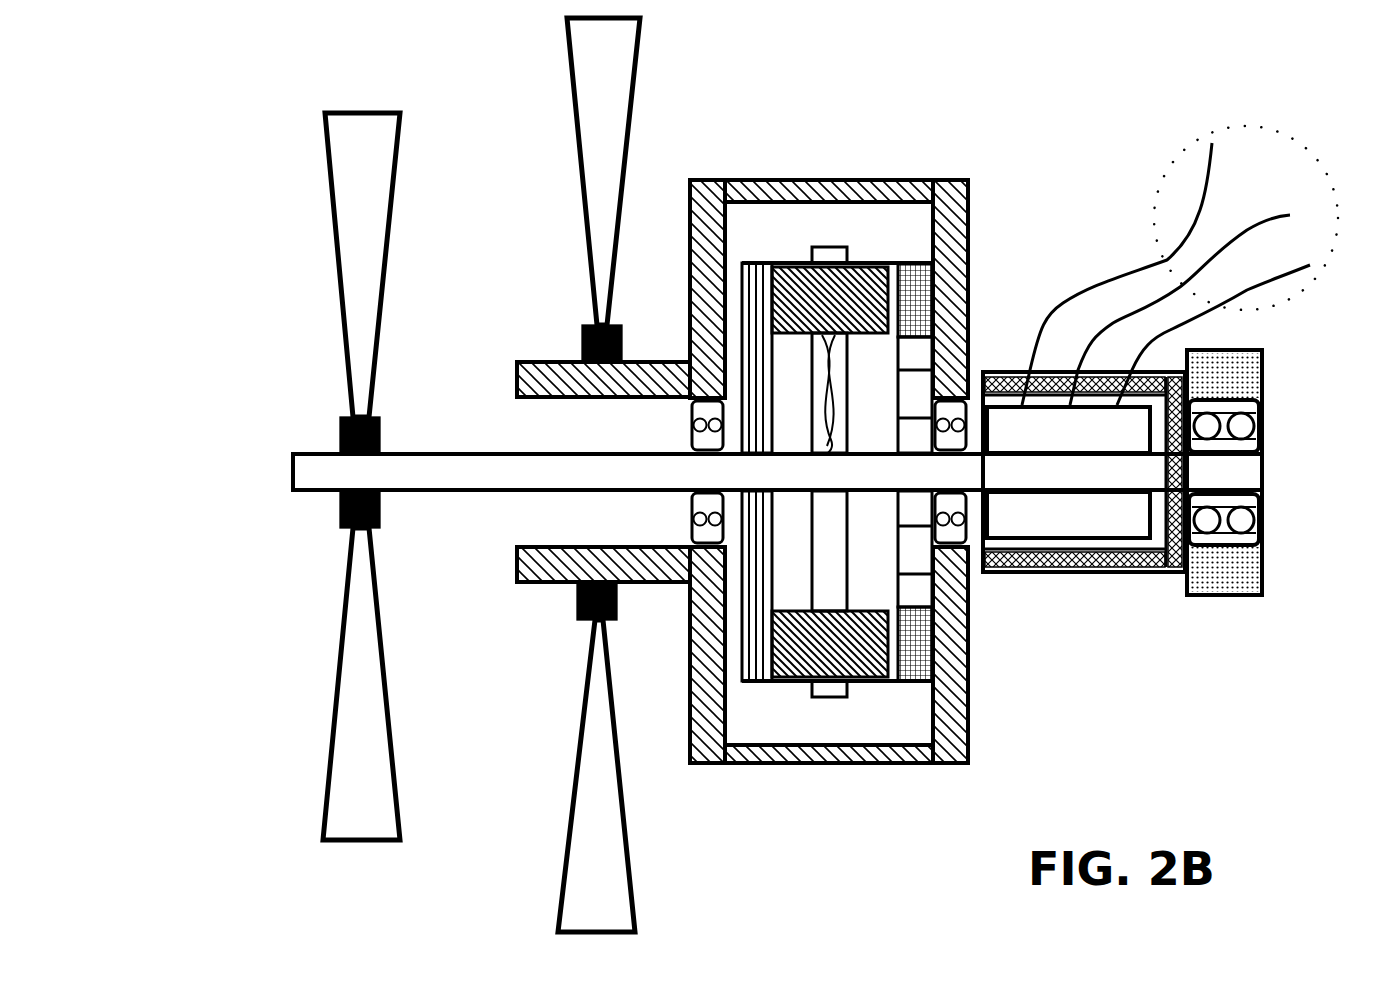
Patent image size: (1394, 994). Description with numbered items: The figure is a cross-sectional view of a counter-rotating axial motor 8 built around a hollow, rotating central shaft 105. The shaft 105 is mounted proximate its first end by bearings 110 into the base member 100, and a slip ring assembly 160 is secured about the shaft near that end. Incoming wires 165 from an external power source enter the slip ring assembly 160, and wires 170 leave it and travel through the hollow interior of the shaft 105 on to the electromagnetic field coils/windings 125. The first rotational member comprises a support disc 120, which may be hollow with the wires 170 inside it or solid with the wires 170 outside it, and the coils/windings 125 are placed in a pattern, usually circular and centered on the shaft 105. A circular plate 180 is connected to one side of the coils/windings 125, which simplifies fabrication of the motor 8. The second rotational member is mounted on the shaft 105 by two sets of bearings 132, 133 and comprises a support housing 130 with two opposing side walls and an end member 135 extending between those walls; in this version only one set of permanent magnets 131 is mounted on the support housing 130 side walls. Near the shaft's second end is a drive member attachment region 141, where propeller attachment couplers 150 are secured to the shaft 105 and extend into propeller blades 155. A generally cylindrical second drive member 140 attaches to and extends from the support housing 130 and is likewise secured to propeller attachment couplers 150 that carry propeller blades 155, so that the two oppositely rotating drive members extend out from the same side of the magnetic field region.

The CR axial motor 8 is at (1140, 699).
The base member 100 is at (1242, 368).
The central shaft 105 is at (292, 457).
The bearings 110 is at (1243, 525).
The support disc 120 is at (828, 247).
The field coils/windings 125 is at (865, 300).
The support housing 130 is at (708, 197).
The permanent magnets 131 is at (905, 330).
The bearings 132 is at (690, 438).
The bearings 133 is at (970, 573).
The end member 135 is at (898, 190).
The second drive member 140 is at (518, 377).
The drive member attachment region 141 is at (380, 453).
The propeller attachment couplers 150 is at (342, 527).
The propeller blades 155 is at (363, 145).
The slip ring assembly 160 is at (1068, 515).
The incoming wires 165 is at (1198, 130).
The wires 170 is at (997, 465).
The circular plate 180 is at (755, 685).